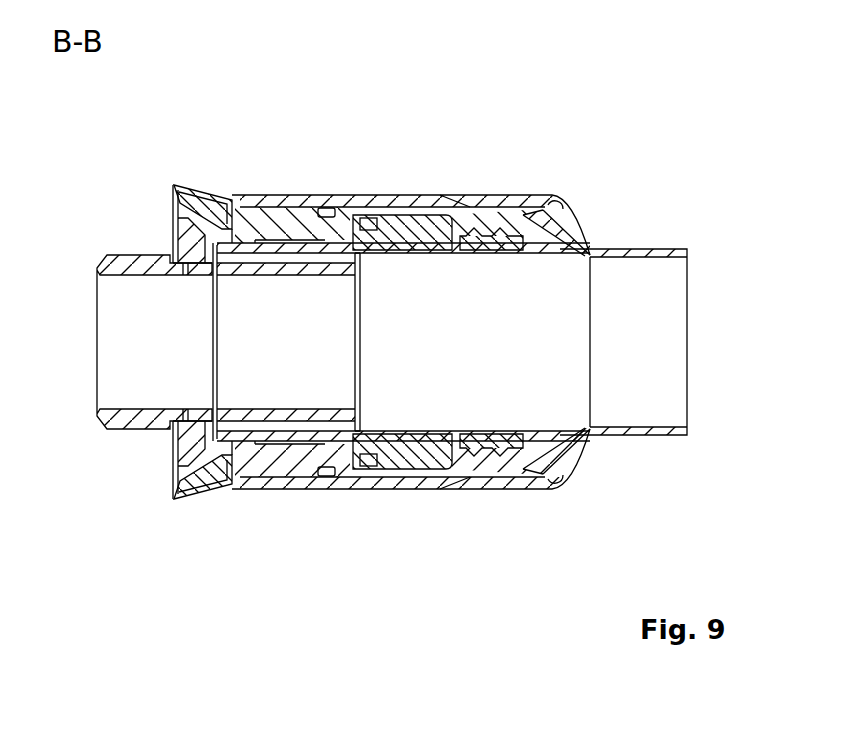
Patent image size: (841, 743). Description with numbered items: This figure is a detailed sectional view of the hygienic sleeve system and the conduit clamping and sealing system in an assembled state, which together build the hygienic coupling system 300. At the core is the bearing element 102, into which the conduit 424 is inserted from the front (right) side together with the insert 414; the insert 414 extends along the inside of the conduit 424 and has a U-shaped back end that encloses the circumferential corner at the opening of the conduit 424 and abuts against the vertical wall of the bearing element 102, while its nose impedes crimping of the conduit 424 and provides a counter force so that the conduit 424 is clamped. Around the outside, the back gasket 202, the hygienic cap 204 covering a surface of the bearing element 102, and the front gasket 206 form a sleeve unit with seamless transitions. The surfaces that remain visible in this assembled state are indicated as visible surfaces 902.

The hygienic coupling system 300 is at (568, 81).
The bearing element 102 is at (122, 431).
The back gasket 202 is at (197, 500).
The hygienic cap 204 is at (437, 489).
The front gasket 206 is at (570, 463).
The insert 414 is at (246, 406).
The conduit 424 is at (657, 437).
The visible surfaces 902 is at (203, 182).